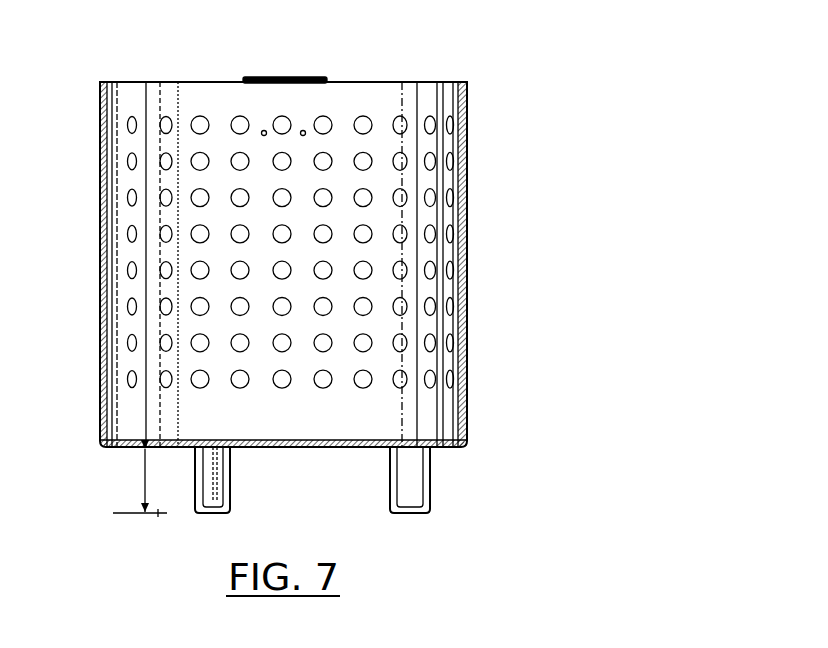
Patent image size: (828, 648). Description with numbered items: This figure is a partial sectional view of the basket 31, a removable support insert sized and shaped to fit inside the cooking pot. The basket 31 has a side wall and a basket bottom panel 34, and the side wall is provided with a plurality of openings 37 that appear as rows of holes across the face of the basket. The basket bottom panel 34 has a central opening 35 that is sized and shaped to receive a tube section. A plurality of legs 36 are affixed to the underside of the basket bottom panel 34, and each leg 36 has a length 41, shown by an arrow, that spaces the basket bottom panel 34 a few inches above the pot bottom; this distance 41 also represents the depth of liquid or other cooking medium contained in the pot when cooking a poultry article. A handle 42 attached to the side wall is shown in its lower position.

The basket 31 is at (467, 82).
The basket bottom panel 34 is at (353, 449).
The central opening 35 is at (279, 438).
The legs 36 is at (205, 515).
The openings 37 is at (200, 116).
The length 41 is at (143, 478).
The handles 42 is at (284, 78).